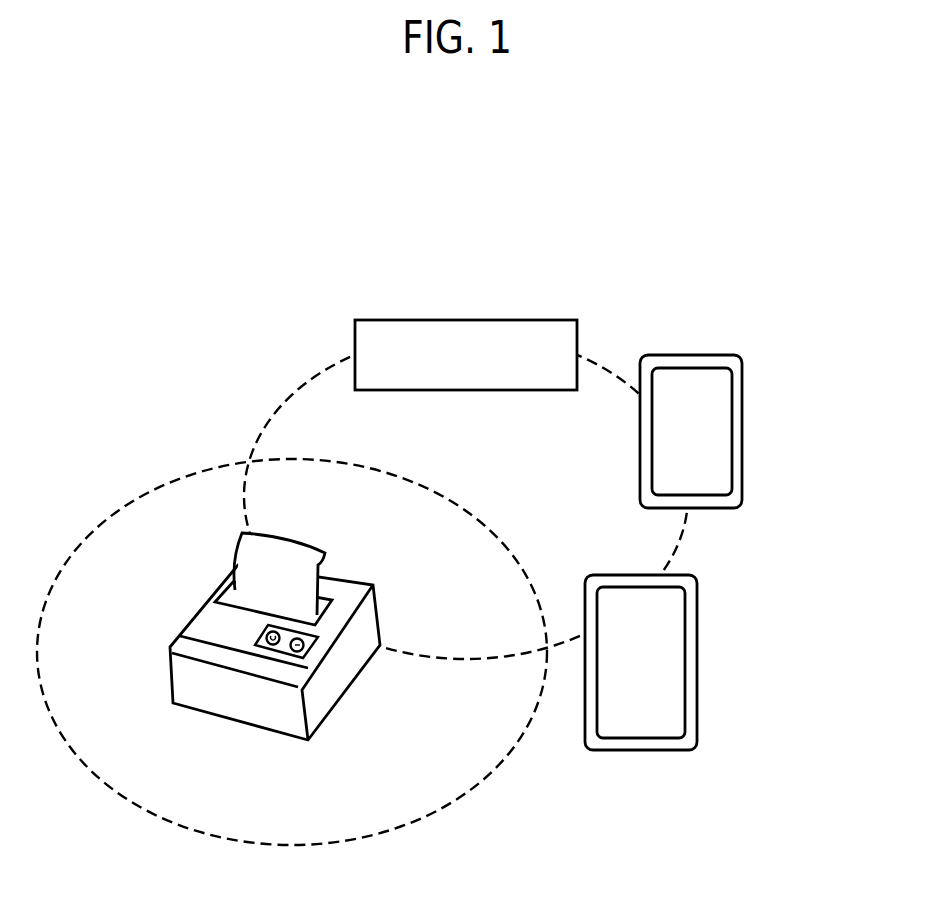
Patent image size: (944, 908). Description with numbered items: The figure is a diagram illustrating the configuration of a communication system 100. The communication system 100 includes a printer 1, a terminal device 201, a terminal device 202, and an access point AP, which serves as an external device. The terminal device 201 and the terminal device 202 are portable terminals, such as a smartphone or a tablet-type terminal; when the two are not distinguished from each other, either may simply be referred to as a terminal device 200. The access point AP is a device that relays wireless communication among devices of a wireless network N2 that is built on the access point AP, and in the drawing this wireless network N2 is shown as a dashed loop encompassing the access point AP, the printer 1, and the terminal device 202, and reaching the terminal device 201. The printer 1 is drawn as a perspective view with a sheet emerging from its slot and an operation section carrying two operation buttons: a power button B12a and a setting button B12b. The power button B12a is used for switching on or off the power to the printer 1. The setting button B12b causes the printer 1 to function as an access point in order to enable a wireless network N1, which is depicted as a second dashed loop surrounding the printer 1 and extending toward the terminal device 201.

The communication system 100 is at (476, 206).
The printer 1 is at (295, 664).
The power button B12a is at (272, 648).
The setting button B12b is at (299, 648).
The access point AP is at (550, 318).
The wireless network N1 is at (422, 820).
The wireless network N2 is at (310, 377).
The terminal device 200 is at (722, 552).
The terminal device 201 is at (698, 656).
The terminal device 202 is at (743, 433).